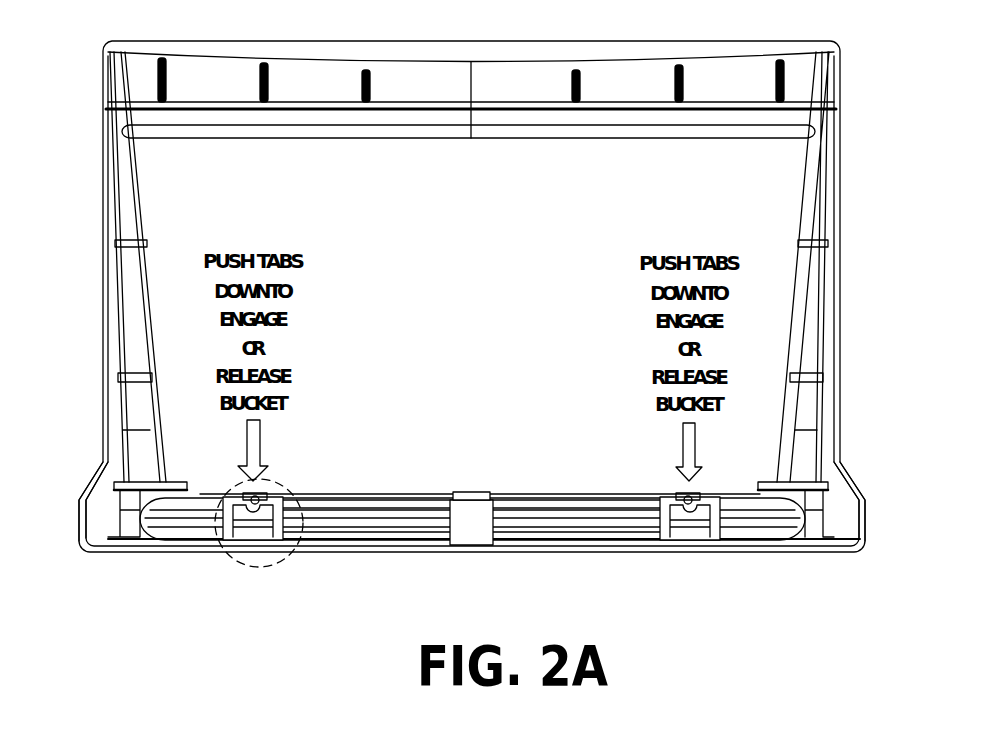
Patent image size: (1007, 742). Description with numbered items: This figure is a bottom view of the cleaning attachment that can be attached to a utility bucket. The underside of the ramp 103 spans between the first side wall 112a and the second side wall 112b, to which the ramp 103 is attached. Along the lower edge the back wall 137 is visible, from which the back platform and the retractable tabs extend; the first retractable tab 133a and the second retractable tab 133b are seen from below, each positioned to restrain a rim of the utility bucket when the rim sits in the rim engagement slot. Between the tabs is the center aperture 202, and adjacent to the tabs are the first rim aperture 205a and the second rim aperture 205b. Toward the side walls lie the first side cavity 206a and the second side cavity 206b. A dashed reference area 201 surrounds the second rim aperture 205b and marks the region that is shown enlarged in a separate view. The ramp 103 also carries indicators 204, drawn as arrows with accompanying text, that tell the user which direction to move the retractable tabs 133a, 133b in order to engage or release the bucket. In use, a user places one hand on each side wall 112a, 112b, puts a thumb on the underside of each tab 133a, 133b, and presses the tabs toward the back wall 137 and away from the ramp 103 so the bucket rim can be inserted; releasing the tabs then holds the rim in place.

The ramp 103 is at (785, 198).
The first side wall 112a is at (865, 503).
The second side wall 112b is at (82, 492).
The first retractable tab 133a is at (683, 540).
The second retractable tab 133b is at (247, 538).
The back wall 137 is at (333, 550).
The reference area 201 is at (250, 565).
The center aperture 202 is at (478, 546).
The indicator 204 is at (261, 434).
The first rim aperture 205a is at (664, 489).
The second rim aperture 205b is at (272, 490).
The first side cavity 206a is at (802, 495).
The second side cavity 206b is at (133, 496).